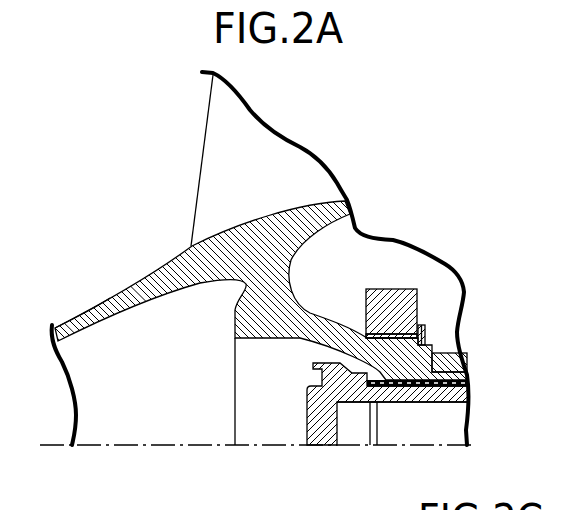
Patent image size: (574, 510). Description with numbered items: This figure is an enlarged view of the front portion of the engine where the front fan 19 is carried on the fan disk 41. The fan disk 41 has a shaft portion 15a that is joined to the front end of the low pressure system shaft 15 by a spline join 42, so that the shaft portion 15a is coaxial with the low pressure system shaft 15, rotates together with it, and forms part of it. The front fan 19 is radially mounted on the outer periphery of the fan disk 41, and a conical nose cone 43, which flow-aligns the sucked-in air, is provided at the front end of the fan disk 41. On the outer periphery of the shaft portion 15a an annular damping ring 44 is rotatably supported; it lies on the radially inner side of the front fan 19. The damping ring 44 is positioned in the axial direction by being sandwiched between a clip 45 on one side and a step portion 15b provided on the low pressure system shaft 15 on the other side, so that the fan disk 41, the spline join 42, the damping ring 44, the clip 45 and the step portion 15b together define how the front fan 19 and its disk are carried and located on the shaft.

The low pressure system shaft 15 is at (303, 417).
The shaft portion 15a is at (408, 402).
The step portion 15b is at (374, 334).
The front fan 19 is at (220, 128).
The fan disk 41 is at (254, 225).
The spline join 42 is at (422, 402).
The nose cone 43 is at (83, 314).
The damping ring 44 is at (413, 290).
The clip 45 is at (427, 330).